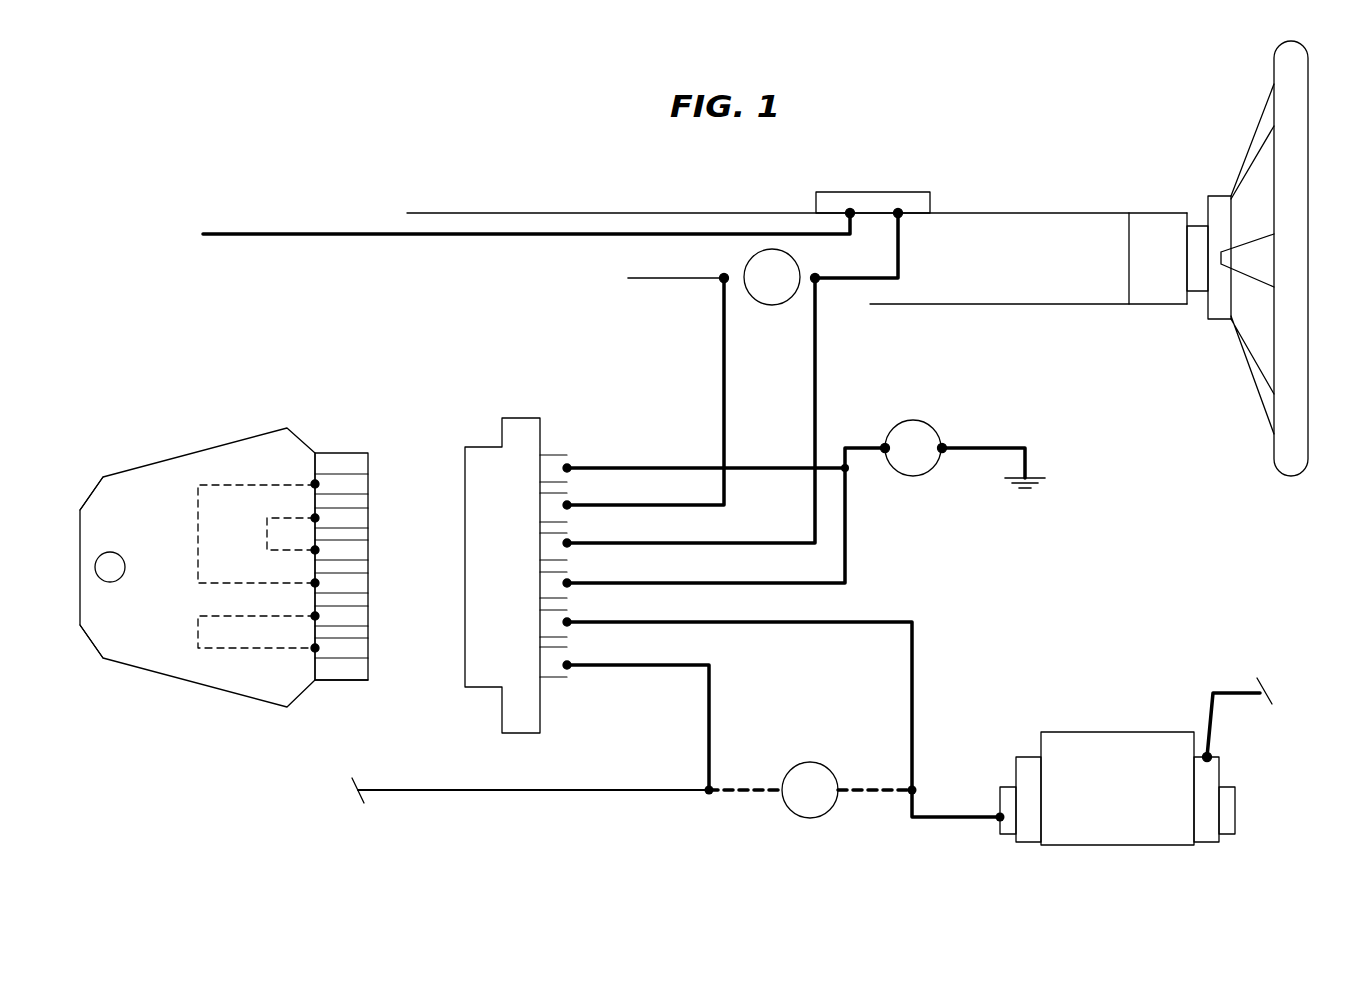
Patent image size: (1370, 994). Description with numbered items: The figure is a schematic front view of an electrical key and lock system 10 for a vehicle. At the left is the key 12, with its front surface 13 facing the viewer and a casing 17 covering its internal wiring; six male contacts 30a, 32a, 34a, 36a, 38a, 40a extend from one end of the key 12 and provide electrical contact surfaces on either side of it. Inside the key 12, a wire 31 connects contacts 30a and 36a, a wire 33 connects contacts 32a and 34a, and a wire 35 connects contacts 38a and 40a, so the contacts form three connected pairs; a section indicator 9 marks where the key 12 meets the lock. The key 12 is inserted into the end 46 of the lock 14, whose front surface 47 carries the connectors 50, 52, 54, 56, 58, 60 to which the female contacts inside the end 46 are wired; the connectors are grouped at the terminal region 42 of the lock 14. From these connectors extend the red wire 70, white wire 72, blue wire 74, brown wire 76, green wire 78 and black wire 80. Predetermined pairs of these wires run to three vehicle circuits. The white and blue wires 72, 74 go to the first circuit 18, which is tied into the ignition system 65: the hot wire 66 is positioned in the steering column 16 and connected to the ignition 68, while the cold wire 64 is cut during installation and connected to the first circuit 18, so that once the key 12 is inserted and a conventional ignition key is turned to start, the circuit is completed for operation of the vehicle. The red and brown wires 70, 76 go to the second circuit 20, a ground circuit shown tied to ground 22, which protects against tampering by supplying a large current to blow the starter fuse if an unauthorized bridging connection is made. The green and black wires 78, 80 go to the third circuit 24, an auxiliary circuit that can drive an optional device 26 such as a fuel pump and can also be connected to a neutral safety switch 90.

The section line 9- 9 is at (342, 417).
The electrical key and lock system 10 is at (398, 361).
The key 12 is at (223, 445).
The front surface 13 is at (103, 477).
The lock 14 is at (512, 418).
The steering column 16 is at (1163, 217).
The casing 17 is at (80, 625).
The CIR1 circuit 18 is at (745, 267).
The CIR2 circuit 20 is at (910, 478).
The ground 22 is at (1030, 477).
The CIR3 circuit 24 is at (813, 762).
The optional device 26 is at (1087, 732).
The male contact 30a is at (370, 485).
The wire 31 is at (198, 507).
The male contact 32a is at (370, 519).
The wire 33 is at (267, 532).
The male contact 34a is at (370, 551).
The wire 35 is at (198, 633).
The male contact 36a is at (370, 584).
The male contact 38a is at (370, 617).
The male contact 40a is at (370, 649).
The module terminals 42 is at (547, 453).
The end of lock 46 is at (463, 470).
The front surface of lock 47 is at (463, 675).
The connector 50 is at (557, 460).
The connector 52 is at (552, 507).
The connector 54 is at (550, 552).
The connector 56 is at (557, 592).
The connector 58 is at (550, 630).
The connector 60 is at (552, 672).
The cold wire 64 is at (900, 254).
The ignition system 65 is at (966, 204).
The hot wire 66 is at (657, 233).
The ignition 68 is at (845, 192).
The red wire 70 is at (706, 453).
The white wire 72 is at (645, 391).
The blue wire 74 is at (691, 410).
The brown wire 76 is at (726, 515).
The green wire 78 is at (783, 705).
The black wire 80 is at (638, 712).
The neutral safety switch 90 is at (358, 778).